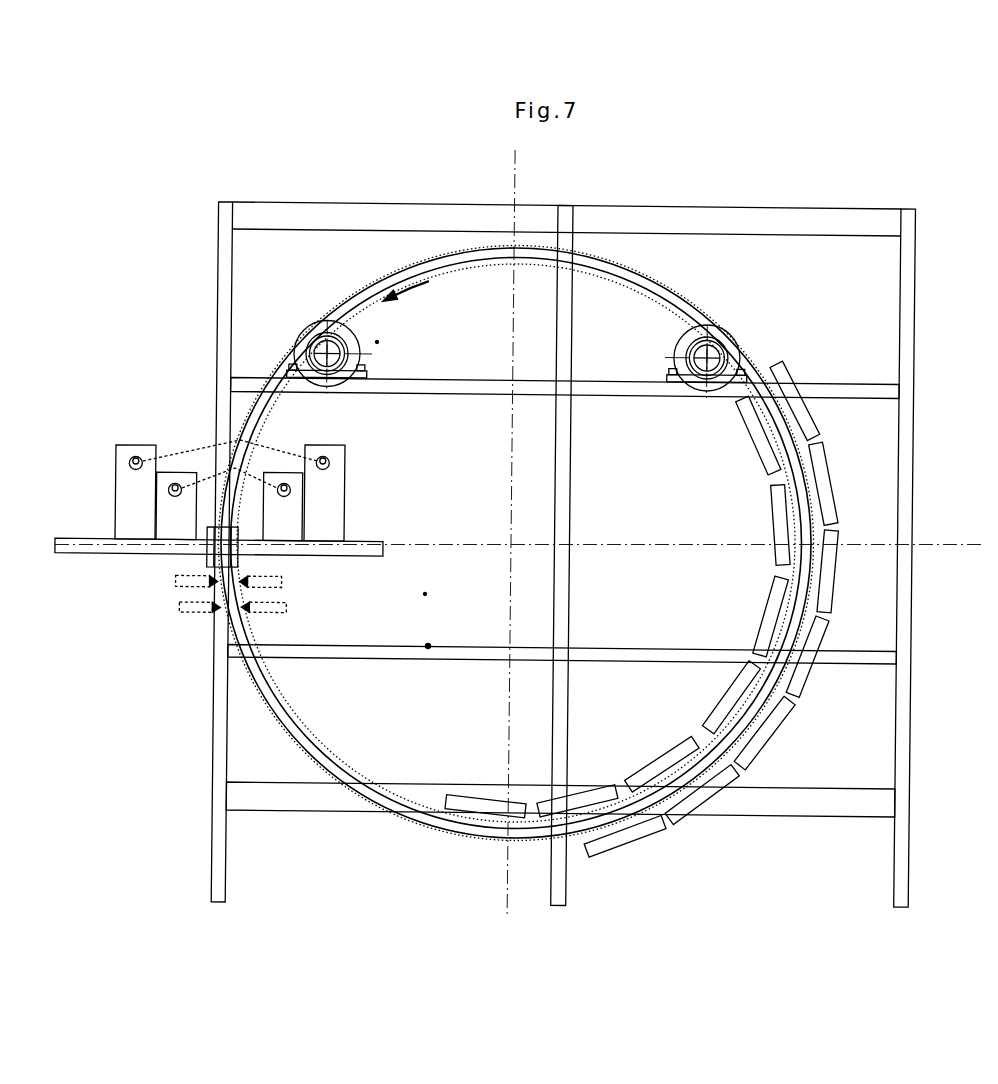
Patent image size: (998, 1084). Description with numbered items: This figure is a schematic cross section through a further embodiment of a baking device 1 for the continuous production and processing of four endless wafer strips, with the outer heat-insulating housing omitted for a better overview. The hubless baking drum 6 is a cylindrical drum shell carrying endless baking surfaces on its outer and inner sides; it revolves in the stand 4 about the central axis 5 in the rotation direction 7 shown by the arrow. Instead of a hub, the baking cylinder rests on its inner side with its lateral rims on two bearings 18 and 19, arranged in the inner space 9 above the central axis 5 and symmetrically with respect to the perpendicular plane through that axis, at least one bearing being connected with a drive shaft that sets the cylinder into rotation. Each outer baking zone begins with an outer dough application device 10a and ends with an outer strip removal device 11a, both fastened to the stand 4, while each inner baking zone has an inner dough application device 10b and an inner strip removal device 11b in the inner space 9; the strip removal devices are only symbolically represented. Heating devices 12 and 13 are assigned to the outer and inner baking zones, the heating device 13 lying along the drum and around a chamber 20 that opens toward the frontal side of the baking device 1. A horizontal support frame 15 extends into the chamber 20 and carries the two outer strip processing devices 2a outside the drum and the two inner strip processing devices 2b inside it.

The baking device 1 is at (843, 208).
The stand 4 is at (912, 888).
The central axis 5 is at (511, 543).
The hubless baking drum 6 is at (430, 262).
The rotation direction 7 is at (400, 278).
The inner space 9 is at (377, 342).
The bearing 18 is at (305, 333).
The bearing 19 is at (710, 340).
The horizontal support frame 15 is at (383, 540).
The outer strip processing device 2a is at (116, 445).
The inner strip processing device 2b is at (345, 445).
The outer strip removal device 11a is at (237, 438).
The inner strip removal device 11b is at (315, 434).
The outer dough application device 10a is at (180, 603).
The inner dough application device 10b is at (287, 603).
The heating device 12 is at (820, 440).
The heating device 13 is at (778, 561).
The chamber 20 is at (425, 594).